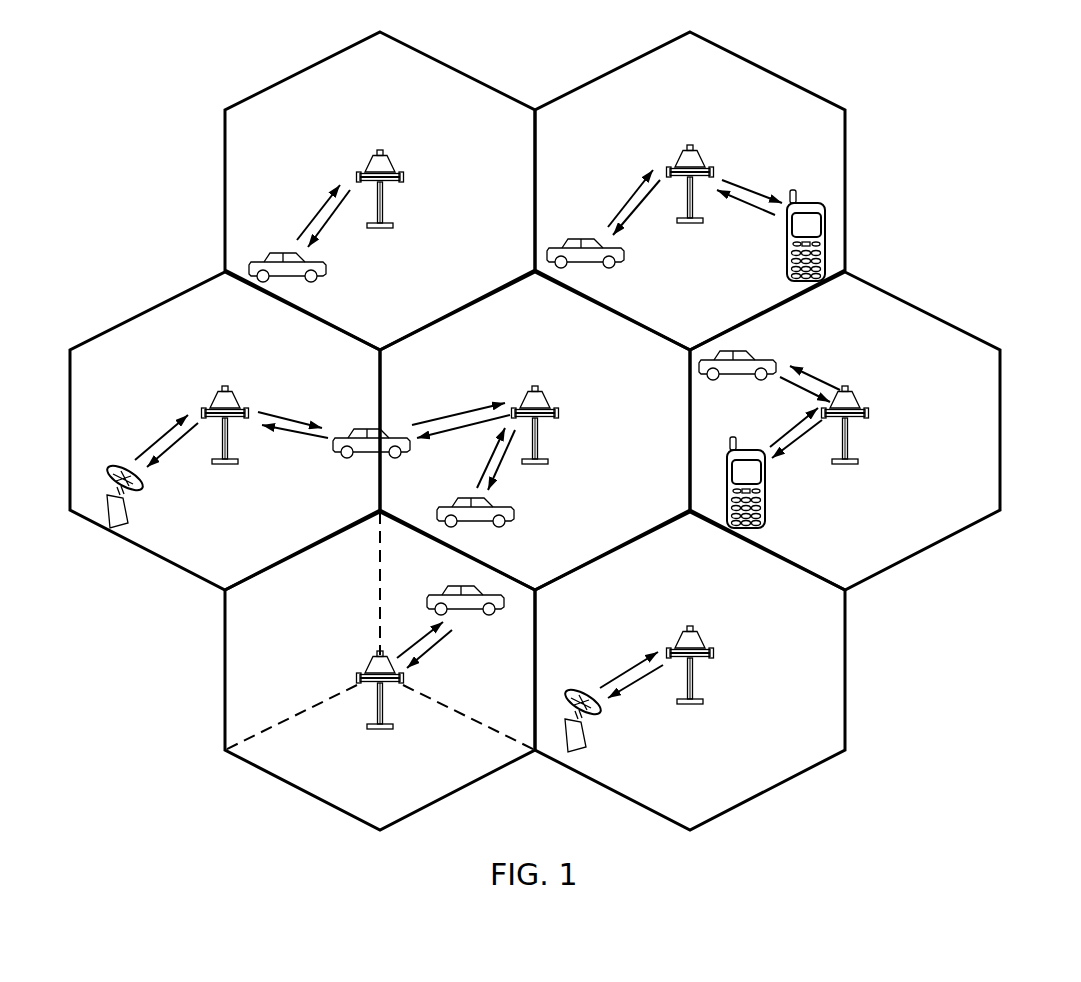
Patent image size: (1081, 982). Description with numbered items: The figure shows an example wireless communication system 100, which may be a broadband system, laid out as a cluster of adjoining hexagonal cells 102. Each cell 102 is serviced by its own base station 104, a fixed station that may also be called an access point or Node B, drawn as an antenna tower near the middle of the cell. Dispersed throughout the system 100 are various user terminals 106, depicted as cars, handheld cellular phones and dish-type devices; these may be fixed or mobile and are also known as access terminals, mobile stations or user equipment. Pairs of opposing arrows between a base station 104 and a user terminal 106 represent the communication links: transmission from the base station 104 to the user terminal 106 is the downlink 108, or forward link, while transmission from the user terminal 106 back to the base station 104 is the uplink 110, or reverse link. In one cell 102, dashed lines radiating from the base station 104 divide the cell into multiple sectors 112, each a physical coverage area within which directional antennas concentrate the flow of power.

The wireless communication system 100 is at (988, 117).
The cell 102 is at (308, 64).
The base station 104 is at (382, 150).
The user terminal 106 is at (327, 277).
The downlink 108 is at (323, 227).
The uplink 110 is at (320, 212).
The sector 112 is at (435, 790).